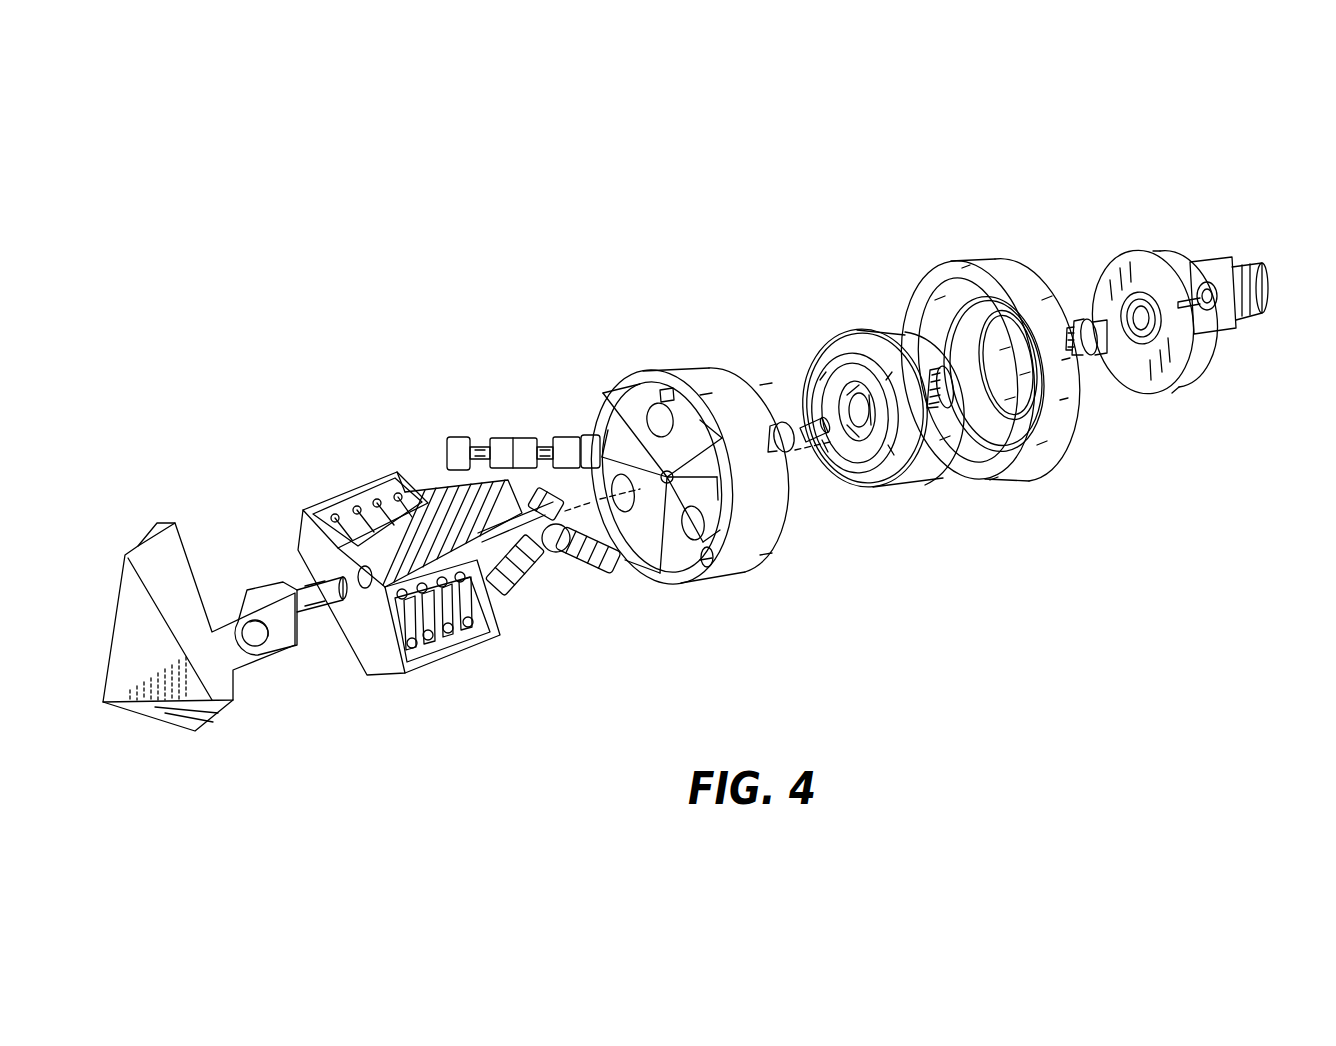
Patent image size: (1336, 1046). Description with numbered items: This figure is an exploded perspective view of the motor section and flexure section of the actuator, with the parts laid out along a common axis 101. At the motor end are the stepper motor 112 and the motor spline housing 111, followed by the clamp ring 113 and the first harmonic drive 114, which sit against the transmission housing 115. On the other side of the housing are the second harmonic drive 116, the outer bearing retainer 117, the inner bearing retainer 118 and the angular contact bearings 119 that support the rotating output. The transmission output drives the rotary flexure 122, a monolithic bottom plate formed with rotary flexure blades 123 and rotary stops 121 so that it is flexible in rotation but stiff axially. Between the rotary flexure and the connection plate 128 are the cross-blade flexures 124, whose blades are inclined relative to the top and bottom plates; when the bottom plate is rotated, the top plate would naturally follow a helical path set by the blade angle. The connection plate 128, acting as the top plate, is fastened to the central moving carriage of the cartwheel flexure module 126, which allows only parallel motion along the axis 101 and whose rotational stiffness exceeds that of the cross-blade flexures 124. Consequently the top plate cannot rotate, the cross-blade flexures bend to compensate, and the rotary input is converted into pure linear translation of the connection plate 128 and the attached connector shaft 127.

The axis 101 is at (589, 468).
The motor spline housing 111 is at (1168, 265).
The stepper motor 112 is at (1210, 334).
The clamp ring 113 is at (1110, 365).
The first harmonic drive 114 is at (996, 281).
The transmission housing 115 is at (999, 346).
The second harmonic drive 116 is at (928, 466).
The outer bearing retainer 117 is at (938, 368).
The inner bearing retainer 118 is at (786, 420).
The angular contact bearings 119 is at (806, 462).
The rotary stops 121 is at (688, 548).
The rotary flexure 122 is at (635, 471).
The rotary flexure blades 123 is at (640, 432).
The cross-blade flexures 124 is at (513, 440).
The cartwheel flexure module 126 is at (433, 658).
The connector shaft 127 is at (296, 574).
The connection plate 128 is at (180, 687).